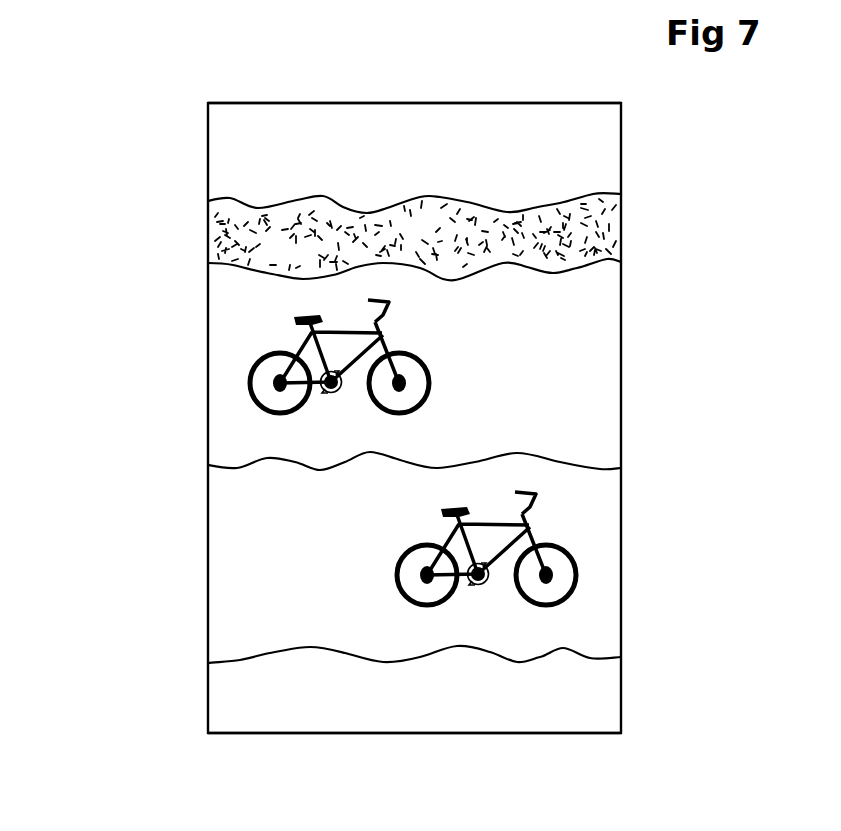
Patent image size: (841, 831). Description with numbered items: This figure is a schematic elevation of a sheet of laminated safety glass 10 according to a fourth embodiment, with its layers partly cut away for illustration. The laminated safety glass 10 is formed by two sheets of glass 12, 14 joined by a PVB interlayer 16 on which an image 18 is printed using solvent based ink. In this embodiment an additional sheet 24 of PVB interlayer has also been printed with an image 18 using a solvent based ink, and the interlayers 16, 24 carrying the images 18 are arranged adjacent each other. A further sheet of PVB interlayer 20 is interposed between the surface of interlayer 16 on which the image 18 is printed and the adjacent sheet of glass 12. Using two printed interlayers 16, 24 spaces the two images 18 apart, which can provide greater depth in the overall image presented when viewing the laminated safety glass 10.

The laminated safety glass 10 is at (146, 711).
The sheet of glass 12 is at (600, 153).
The sheet of glass 14 is at (603, 691).
The PVB interlayer 16 is at (608, 369).
The image 18 is at (249, 383).
The further sheet of PVB interlayer 20 is at (601, 232).
The additional sheet of PVB interlayer 24 is at (601, 563).